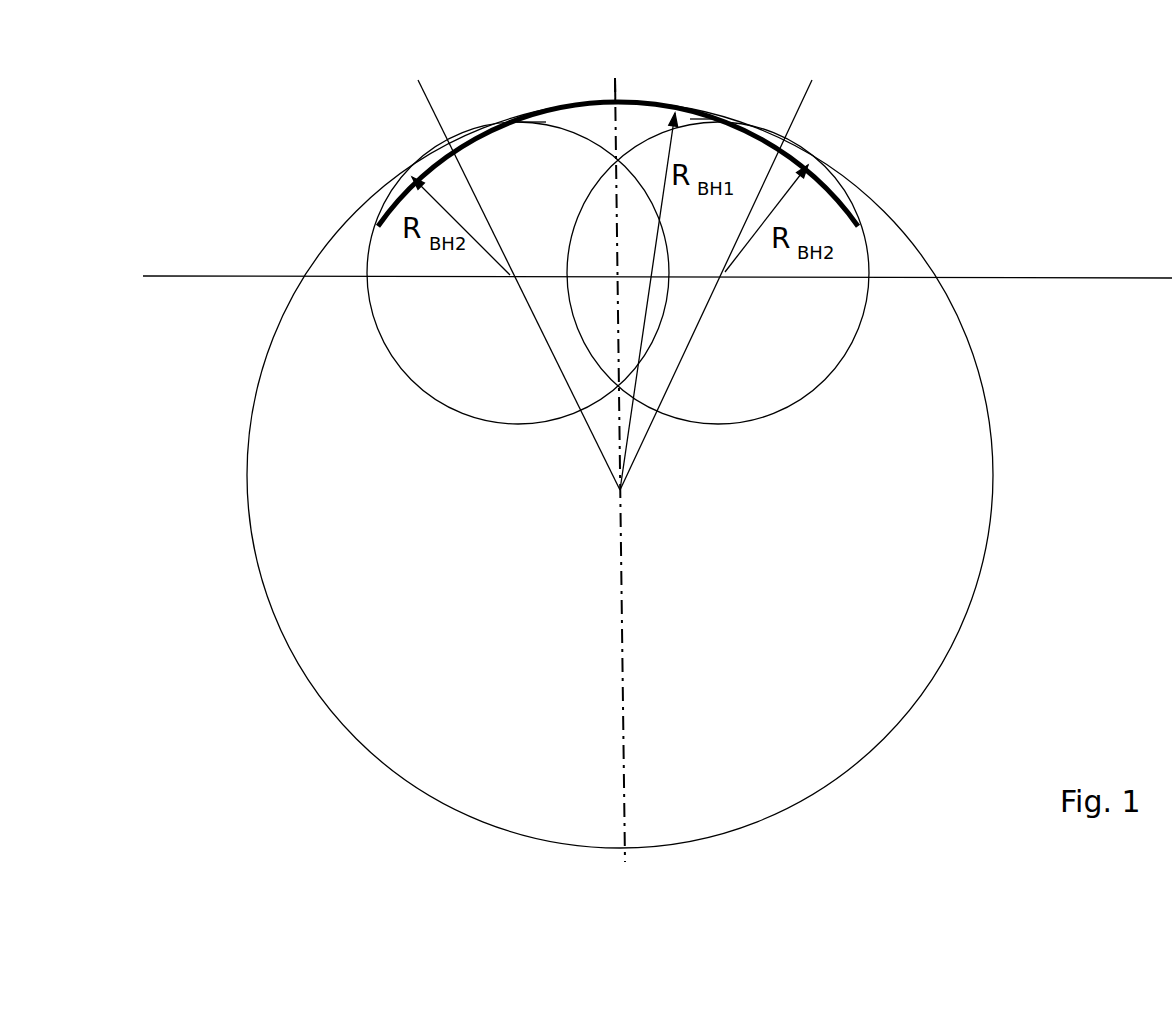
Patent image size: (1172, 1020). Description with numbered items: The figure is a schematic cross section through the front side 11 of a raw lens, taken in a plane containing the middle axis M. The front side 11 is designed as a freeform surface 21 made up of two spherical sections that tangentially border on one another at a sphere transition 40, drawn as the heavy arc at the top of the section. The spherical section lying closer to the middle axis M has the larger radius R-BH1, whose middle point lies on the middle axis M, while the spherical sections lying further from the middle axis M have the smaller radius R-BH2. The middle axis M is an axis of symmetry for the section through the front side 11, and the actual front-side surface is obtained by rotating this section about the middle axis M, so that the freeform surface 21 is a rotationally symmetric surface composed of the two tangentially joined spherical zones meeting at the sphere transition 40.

The sphere transition 40 is at (440, 136).
The front side 11 is at (637, 154).
The freeform surface 21 is at (637, 154).